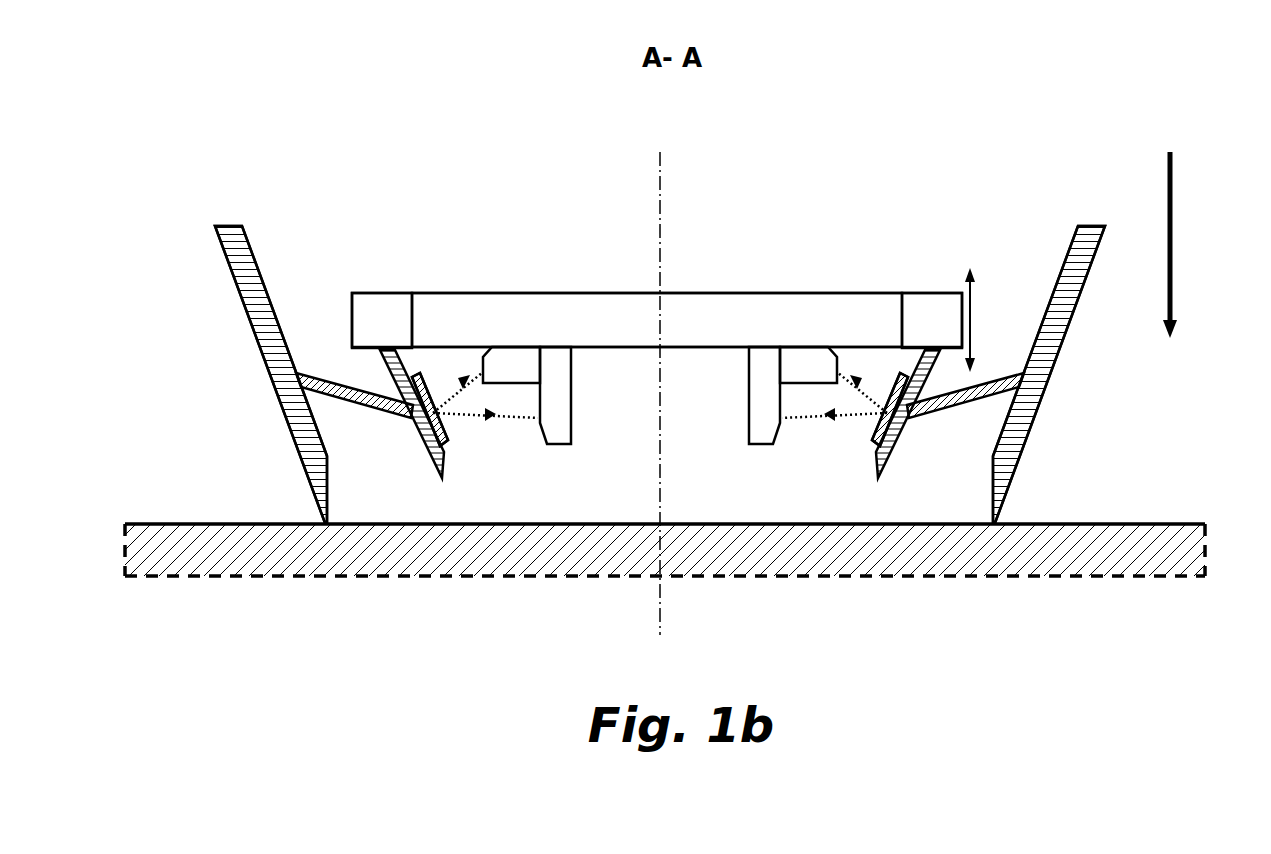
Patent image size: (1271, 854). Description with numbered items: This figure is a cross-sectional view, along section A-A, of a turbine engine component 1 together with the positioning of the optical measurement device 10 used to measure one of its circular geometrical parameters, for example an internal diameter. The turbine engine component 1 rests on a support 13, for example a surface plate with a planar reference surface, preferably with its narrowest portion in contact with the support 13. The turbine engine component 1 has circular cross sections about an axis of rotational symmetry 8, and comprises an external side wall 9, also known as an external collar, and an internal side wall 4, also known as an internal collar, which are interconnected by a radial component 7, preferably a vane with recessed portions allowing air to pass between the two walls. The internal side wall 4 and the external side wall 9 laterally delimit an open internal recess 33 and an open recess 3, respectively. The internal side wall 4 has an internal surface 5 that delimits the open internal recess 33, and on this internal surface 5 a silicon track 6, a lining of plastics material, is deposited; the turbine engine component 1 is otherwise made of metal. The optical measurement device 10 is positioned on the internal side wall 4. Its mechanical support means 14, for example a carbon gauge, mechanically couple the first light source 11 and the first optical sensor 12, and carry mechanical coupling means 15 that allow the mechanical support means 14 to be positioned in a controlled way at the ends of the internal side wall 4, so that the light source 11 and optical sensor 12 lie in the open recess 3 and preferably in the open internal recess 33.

The turbine engine component 1 is at (280, 400).
The open recess 3 is at (573, 269).
The internal side wall 4 is at (427, 437).
The internal surface 5 is at (443, 447).
The silicon track 6 is at (440, 423).
The radial component 7 is at (312, 377).
The axis of rotational symmetry 8 is at (660, 267).
The external side wall 9 is at (250, 295).
The optical measurement device 10 is at (440, 213).
The first light source 11 is at (660, 366).
The first optical sensor 12 is at (555, 393).
The support 13 is at (167, 523).
The mechanical support means 14 is at (657, 320).
The mechanical coupling means 15 is at (657, 320).
The open internal recess 33 is at (690, 406).